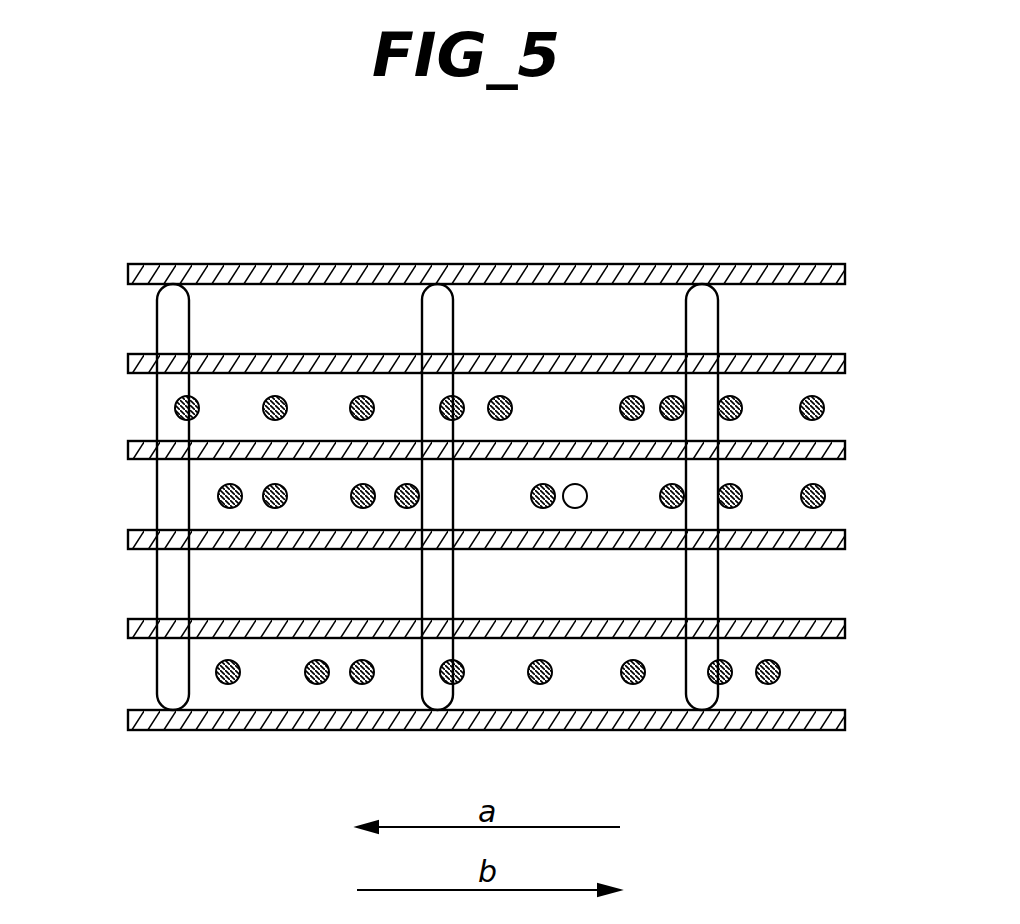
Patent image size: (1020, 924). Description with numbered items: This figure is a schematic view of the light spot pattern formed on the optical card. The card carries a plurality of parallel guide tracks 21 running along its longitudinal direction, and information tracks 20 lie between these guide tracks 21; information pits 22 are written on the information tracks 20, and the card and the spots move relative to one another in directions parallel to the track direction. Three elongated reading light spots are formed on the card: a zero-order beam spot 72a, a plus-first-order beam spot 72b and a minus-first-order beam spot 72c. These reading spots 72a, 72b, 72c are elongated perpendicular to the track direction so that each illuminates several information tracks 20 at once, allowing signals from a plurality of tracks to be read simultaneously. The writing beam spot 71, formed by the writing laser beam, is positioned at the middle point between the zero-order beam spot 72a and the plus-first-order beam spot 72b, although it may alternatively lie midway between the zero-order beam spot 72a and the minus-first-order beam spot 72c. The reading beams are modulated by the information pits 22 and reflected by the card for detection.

The information tracks 20 is at (145, 495).
The guide tracks 21 is at (130, 538).
The information pits 22 is at (824, 408).
The writing beam spot 71 is at (578, 508).
The zero-order beam spot 72a is at (455, 307).
The +1-order beam spot 72b is at (720, 307).
The −1-order beam spot 72c is at (192, 307).